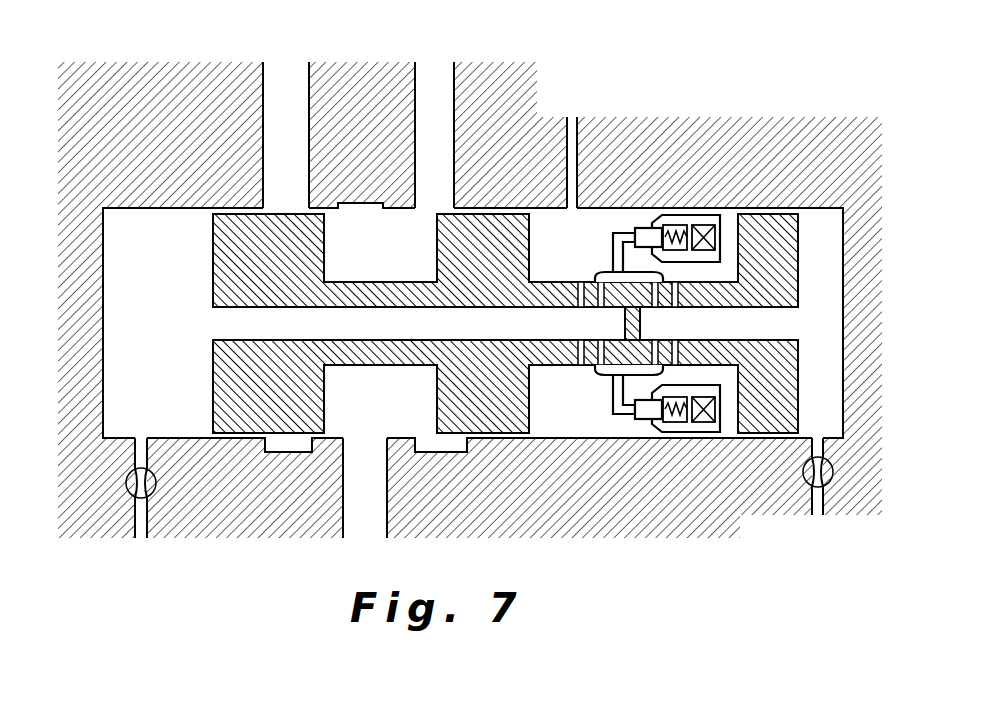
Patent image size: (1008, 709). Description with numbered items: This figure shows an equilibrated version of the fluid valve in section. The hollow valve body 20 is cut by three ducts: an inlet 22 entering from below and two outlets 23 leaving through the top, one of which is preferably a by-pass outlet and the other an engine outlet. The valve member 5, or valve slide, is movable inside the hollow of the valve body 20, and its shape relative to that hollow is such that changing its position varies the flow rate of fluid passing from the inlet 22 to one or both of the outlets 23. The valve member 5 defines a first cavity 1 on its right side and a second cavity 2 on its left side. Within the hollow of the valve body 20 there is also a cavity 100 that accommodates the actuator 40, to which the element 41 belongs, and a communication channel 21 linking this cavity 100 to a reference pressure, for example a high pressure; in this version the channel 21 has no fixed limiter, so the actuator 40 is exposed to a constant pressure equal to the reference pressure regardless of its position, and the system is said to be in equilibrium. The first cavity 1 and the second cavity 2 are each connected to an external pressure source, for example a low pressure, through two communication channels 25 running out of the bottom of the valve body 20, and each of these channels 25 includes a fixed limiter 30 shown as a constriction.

The valve body 20 is at (114, 52).
The outlets 23 is at (287, 140).
The communication channel 21 is at (572, 118).
The inlet 22 is at (367, 502).
The communication channels 25 is at (141, 513).
The fixed limiter 30 is at (153, 487).
The actuator 40 is at (664, 229).
The valve rod 41 is at (642, 228).
The cavity 100 is at (586, 258).
The valve member 5 is at (263, 274).
The second cavity 2 is at (149, 338).
The first cavity 1 is at (811, 333).